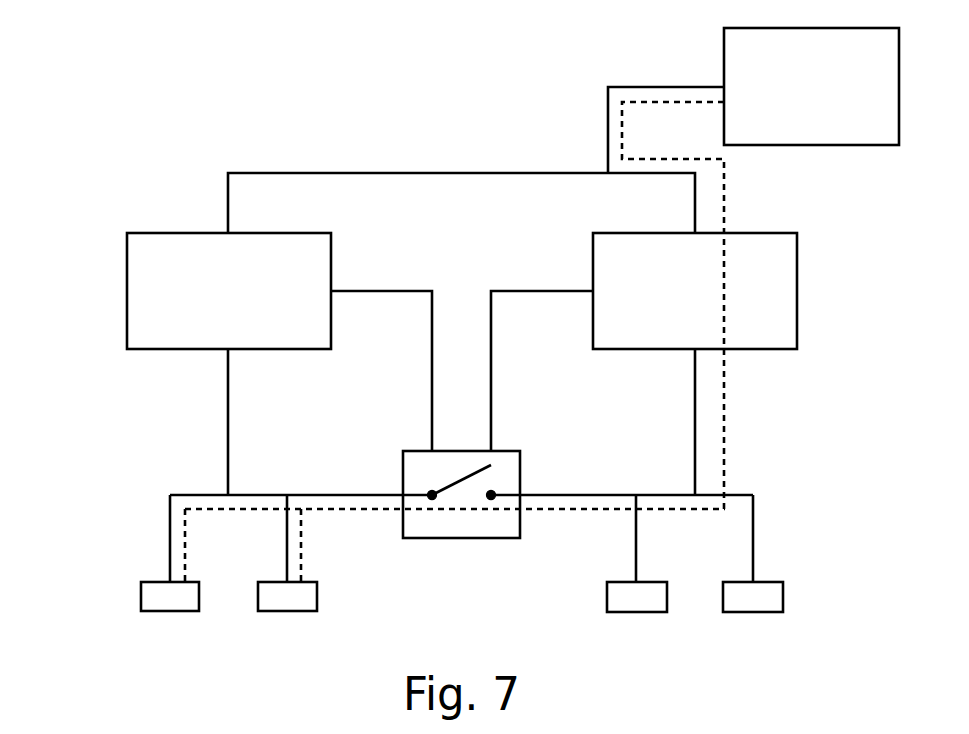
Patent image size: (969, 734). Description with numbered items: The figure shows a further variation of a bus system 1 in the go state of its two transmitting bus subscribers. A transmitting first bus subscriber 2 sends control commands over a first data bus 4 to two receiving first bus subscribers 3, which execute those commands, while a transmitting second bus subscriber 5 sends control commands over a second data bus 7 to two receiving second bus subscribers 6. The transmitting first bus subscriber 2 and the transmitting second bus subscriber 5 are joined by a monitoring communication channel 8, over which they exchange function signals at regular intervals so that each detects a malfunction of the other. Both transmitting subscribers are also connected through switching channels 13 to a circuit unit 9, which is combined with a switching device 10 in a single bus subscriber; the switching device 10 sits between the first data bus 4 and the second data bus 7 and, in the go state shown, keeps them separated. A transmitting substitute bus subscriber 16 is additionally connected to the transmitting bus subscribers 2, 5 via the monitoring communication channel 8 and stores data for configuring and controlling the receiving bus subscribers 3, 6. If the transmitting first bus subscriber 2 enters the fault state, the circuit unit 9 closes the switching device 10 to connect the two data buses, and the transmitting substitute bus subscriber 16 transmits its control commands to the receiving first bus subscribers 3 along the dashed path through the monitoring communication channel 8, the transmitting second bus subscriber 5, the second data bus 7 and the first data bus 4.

The bus system 1 is at (112, 87).
The transmitting first bus subscriber 2 is at (170, 290).
The receiving first bus subscribers 3 is at (162, 601).
The first data bus 4 is at (228, 423).
The transmitting second bus subscriber 5 is at (783, 262).
The receiving second bus subscribers 6 is at (628, 601).
The second data bus 7 is at (695, 422).
The monitoring communication channel 8 is at (538, 173).
The circuit unit 9 is at (474, 552).
The switching device 10 is at (492, 523).
The switching channels 13 is at (412, 291).
The transmitting substitute bus subscriber 16 is at (737, 80).